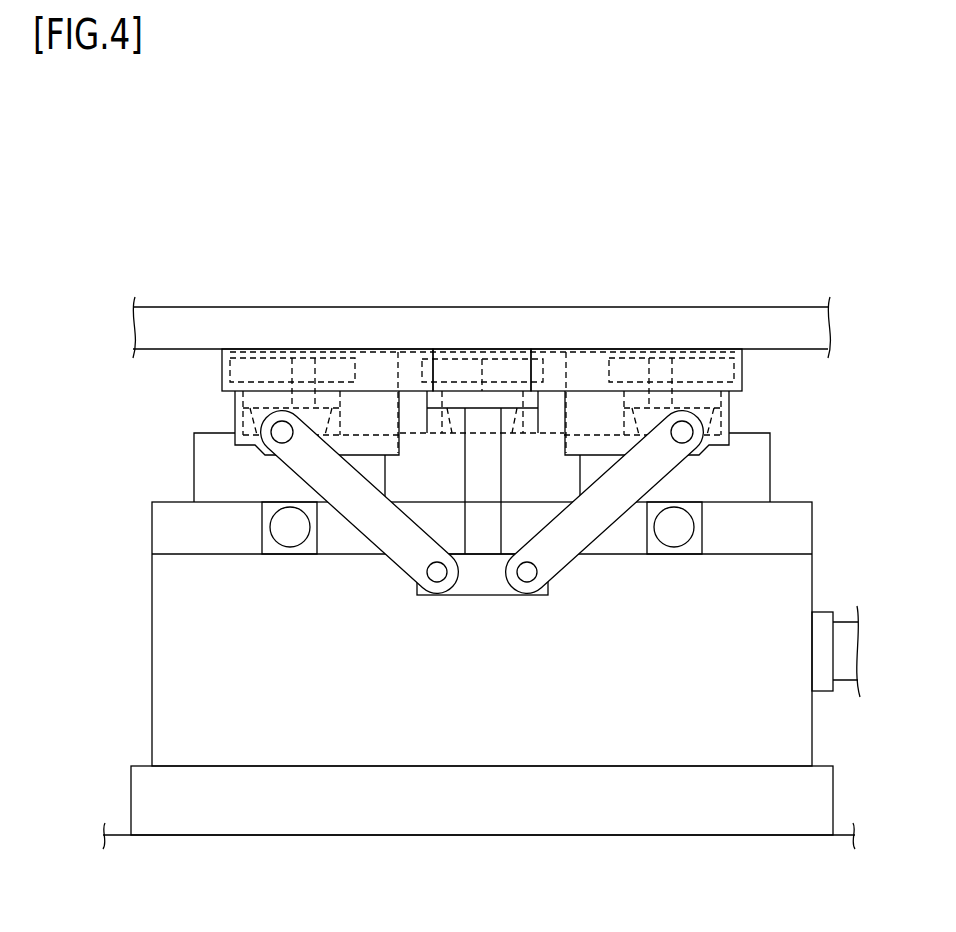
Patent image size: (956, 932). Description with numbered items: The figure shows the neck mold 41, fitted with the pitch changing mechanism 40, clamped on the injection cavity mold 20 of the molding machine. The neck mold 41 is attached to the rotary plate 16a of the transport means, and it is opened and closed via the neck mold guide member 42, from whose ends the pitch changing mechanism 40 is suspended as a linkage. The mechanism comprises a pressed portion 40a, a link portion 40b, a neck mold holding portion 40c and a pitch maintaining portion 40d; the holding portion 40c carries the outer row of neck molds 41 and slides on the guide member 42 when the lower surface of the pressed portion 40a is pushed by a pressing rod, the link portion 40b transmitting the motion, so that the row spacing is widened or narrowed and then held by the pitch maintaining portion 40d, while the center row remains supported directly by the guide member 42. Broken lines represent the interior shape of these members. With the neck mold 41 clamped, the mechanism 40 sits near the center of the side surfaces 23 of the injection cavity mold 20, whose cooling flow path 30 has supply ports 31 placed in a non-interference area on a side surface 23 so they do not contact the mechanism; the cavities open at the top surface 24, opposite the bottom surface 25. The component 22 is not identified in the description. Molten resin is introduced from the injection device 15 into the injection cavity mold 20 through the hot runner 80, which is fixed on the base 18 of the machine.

The injection device 15 is at (843, 632).
The rotary plate 16a is at (527, 320).
The base 18 is at (842, 838).
The injection cavity mold 20 is at (200, 408).
The upper frame 22 is at (509, 429).
The side surface 23 is at (489, 606).
The top surface 24 is at (747, 430).
The bottom surface 25 is at (748, 557).
The cooling flow path 30 is at (263, 534).
The supply port 31 is at (290, 540).
The pitch changing mechanism 40 is at (557, 565).
The pressed portion 40a is at (480, 582).
The link portion 40b is at (403, 556).
The neck mold holding portion 40c is at (238, 437).
The pitch maintaining portion 40d is at (483, 520).
The neck mold 41 is at (313, 376).
The neck mold guide member 42 is at (224, 368).
The hot runner 80 is at (420, 700).